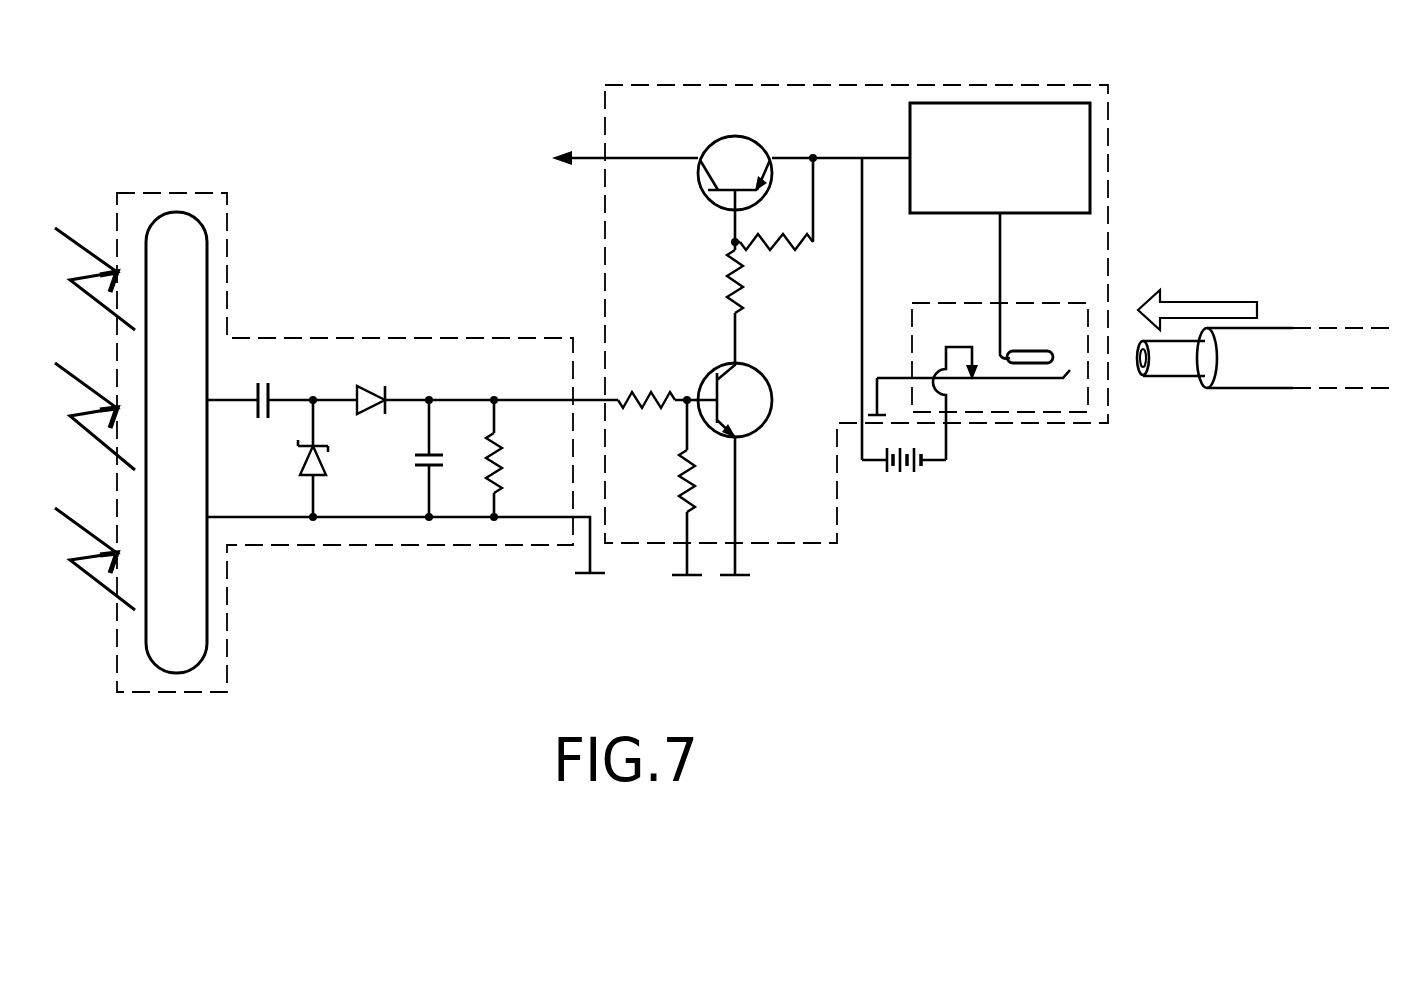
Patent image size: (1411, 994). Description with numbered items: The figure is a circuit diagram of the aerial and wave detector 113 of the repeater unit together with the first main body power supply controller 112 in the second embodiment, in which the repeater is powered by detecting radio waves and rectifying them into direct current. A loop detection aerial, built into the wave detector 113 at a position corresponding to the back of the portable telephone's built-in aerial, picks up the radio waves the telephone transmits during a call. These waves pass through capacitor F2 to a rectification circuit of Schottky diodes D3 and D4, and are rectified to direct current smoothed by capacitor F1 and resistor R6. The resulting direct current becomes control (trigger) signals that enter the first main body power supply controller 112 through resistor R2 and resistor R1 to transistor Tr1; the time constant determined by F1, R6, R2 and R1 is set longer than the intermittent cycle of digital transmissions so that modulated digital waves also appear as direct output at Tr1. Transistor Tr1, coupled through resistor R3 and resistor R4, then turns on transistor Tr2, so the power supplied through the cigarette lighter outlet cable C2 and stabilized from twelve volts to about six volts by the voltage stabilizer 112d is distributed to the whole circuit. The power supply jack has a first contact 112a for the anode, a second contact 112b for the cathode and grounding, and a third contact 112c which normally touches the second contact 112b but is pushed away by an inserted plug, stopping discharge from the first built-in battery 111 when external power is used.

The first built-in battery 111 is at (906, 482).
The first main body power supply controller 112 is at (917, 314).
The first contact 112a is at (1030, 351).
The second contact 112b is at (1055, 380).
The third contact 112c is at (960, 345).
The voltage stabilizer 112d is at (1001, 103).
The wave detector 113 is at (463, 338).
The cigarette lighter outlet cable C2 is at (1257, 390).
The capacitor F2 is at (254, 384).
The capacitor F1 is at (407, 458).
The Schottky diode D3 is at (373, 385).
The Schottky diode D4 is at (285, 458).
The resistor R1 is at (672, 487).
The resistor R2 is at (646, 421).
The resistor R3 is at (714, 251).
The resistor R4 is at (774, 226).
The resistor R6 is at (516, 458).
The transistor Tr1 is at (708, 362).
The transistor Tr2 is at (700, 155).